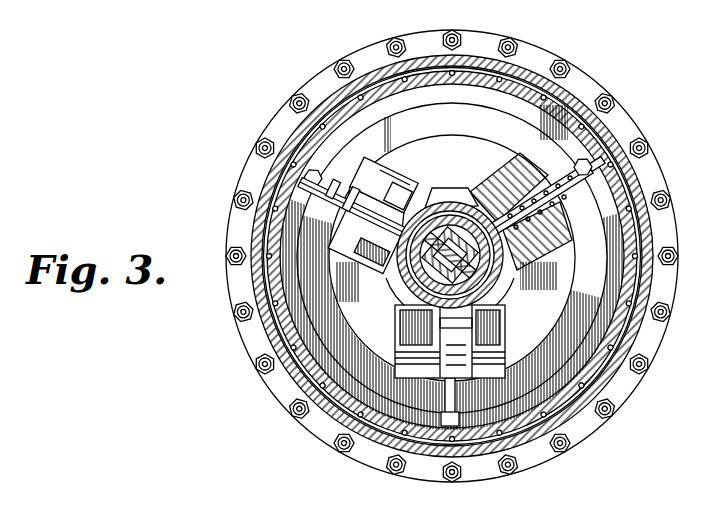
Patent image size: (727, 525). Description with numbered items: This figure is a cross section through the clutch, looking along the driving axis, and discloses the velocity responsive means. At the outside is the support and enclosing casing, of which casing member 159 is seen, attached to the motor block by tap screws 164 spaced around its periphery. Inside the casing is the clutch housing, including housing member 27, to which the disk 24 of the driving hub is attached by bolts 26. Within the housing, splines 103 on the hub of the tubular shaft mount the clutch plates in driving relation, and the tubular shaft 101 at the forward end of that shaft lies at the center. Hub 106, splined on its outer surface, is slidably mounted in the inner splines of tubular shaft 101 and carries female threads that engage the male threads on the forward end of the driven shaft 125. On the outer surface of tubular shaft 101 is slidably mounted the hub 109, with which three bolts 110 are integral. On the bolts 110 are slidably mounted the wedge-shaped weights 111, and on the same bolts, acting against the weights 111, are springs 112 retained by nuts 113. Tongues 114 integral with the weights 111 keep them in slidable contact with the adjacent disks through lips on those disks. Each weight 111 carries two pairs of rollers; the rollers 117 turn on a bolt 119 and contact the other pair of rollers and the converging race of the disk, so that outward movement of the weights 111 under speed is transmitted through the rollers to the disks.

The tap screws 164 is at (444, 37).
The housing member 27 is at (320, 99).
The disk 24 is at (572, 95).
The splines 103 is at (496, 126).
The wedge-shaped weights 111 is at (357, 156).
The bolt 119 is at (410, 169).
The bolts 110 is at (340, 181).
The rollers 117 is at (398, 192).
The driven shaft 125 is at (450, 248).
The nuts 113 is at (302, 174).
The springs 112 is at (333, 197).
The tongues 114 is at (350, 236).
The bolts 26 is at (278, 306).
The hub 106 is at (397, 272).
The tubular shaft 101 is at (506, 292).
The hub 109 is at (402, 313).
The casing member 159 is at (477, 460).